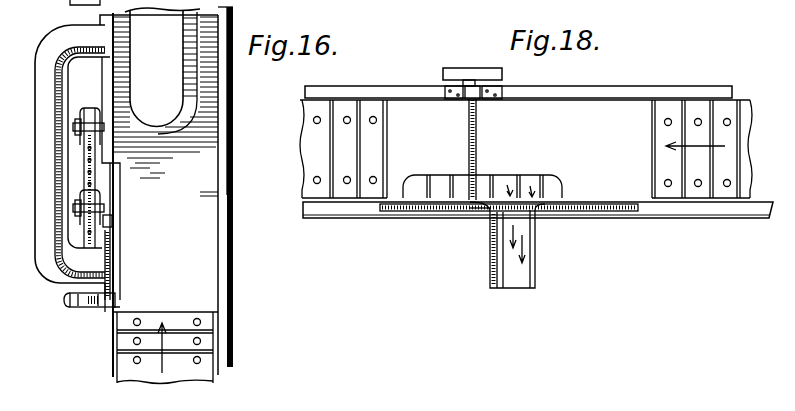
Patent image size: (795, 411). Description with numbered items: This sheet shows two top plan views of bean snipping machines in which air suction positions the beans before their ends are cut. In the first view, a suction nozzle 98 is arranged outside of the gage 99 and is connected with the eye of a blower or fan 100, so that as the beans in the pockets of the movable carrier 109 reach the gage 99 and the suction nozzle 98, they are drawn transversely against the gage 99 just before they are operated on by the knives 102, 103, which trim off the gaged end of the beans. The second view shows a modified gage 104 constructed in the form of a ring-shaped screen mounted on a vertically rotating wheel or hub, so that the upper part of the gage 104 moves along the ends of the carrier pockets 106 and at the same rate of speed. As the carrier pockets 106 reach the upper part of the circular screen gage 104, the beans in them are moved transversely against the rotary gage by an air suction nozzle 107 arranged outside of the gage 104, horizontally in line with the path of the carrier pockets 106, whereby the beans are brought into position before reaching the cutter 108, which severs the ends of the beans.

In FIG. 16, the suction nozzle 98 is at (72, 154).
In FIG. 16, the gage 99 is at (98, 273).
In FIG. 16, the blower or fan 100 is at (162, 71).
In FIG. 16, the knife 102 is at (110, 222).
In FIG. 16, the knife 103 is at (112, 232).
In FIG. 18, the gage 104 is at (413, 208).
In FIG. 18, the carrier pockets 106 is at (703, 195).
In FIG. 18, the air suction nozzle 107 is at (522, 278).
In FIG. 18, the cutter 108 is at (500, 196).
In FIG. 16, the movable carrier 109 is at (203, 342).